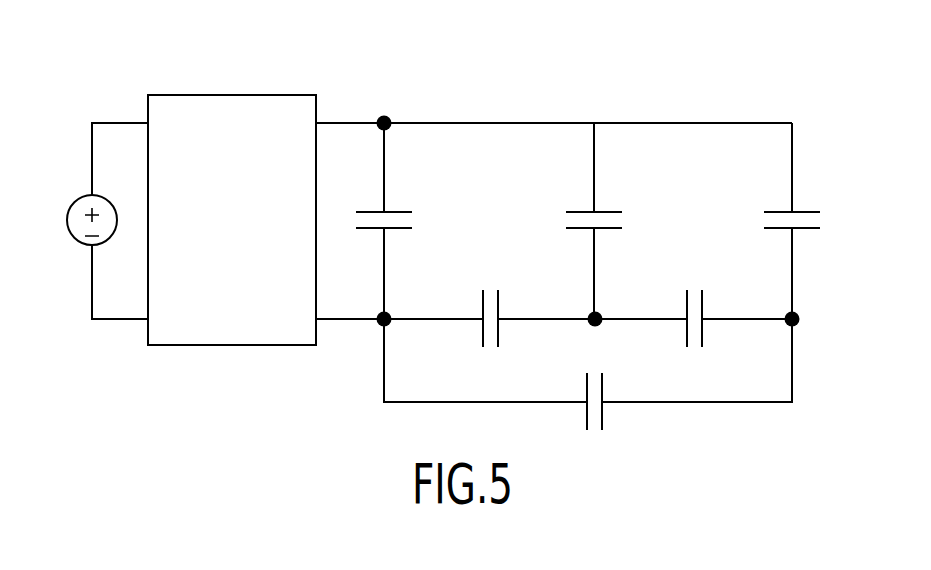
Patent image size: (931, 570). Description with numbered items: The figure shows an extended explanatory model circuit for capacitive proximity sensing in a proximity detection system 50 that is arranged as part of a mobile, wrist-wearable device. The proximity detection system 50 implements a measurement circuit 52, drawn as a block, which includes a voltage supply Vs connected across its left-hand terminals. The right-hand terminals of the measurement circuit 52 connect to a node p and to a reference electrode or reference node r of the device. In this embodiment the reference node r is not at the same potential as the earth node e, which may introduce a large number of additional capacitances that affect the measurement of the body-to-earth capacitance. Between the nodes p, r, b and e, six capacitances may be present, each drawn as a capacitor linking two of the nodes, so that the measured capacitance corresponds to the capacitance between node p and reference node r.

The proximity detection system 50 is at (588, 218).
The measurement circuit 52 is at (237, 113).
The voltage supply Vs is at (92, 221).
The node p is at (381, 115).
The reference node r is at (392, 329).
The node b is at (604, 330).
The earth node e is at (800, 330).